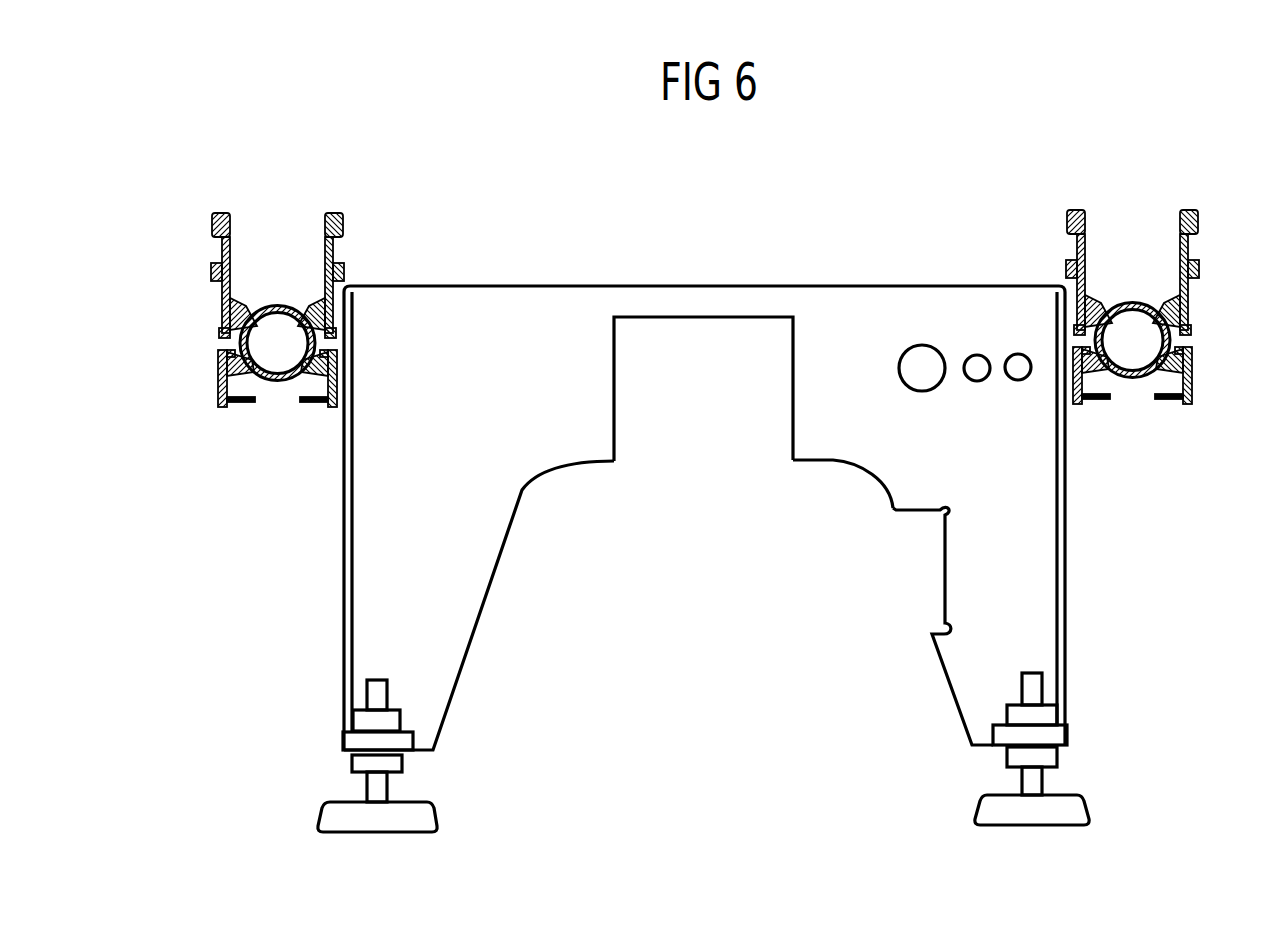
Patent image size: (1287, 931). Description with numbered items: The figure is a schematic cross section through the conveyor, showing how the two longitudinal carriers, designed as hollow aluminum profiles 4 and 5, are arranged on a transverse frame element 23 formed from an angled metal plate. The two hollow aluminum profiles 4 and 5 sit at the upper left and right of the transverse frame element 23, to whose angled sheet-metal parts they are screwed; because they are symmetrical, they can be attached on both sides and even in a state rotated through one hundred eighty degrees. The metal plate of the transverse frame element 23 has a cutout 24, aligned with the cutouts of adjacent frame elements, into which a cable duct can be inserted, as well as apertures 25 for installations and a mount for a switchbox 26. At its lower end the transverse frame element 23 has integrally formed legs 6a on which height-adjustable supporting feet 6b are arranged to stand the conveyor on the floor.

The hollow aluminum profile 4 is at (215, 293).
The hollow aluminum profile 5 is at (1200, 290).
The transverse frame element 23 is at (509, 301).
The mount for switchbox 26 is at (697, 336).
The aperture 25 is at (920, 356).
The cutout 24 is at (930, 558).
The leg 6a is at (366, 555).
The height-adjustable supporting foot 6b is at (415, 812).